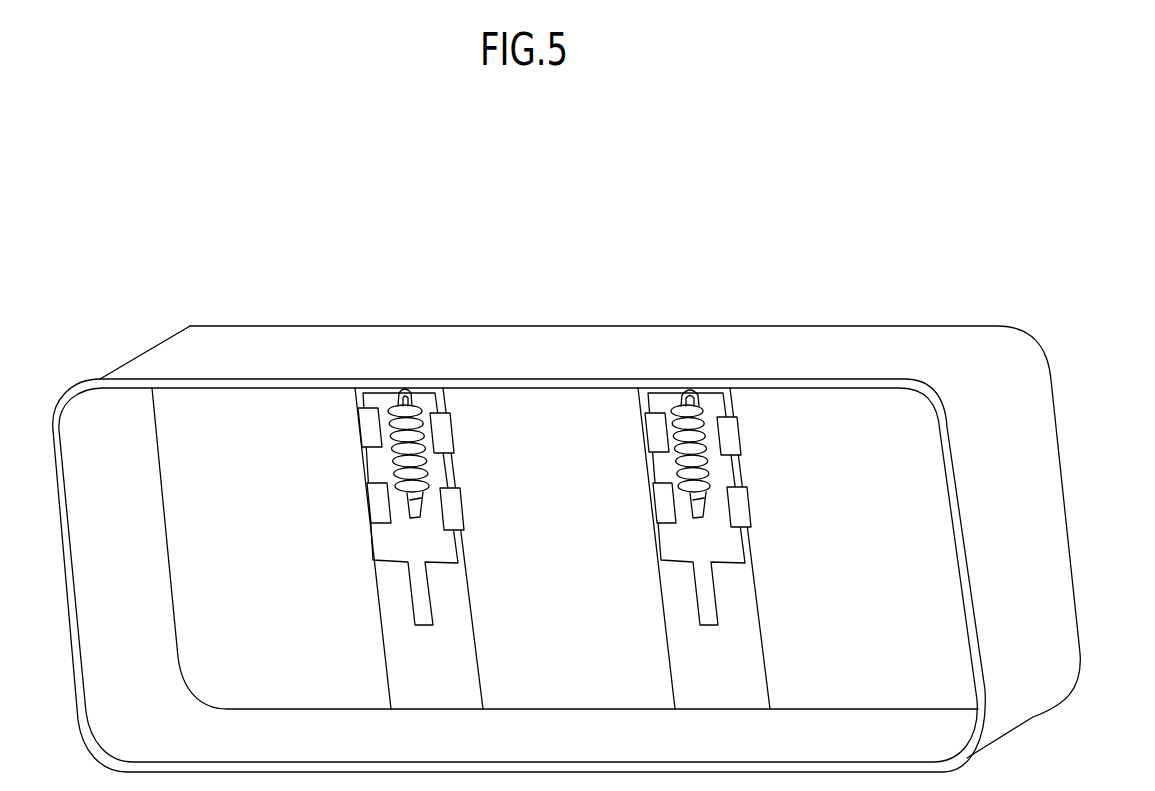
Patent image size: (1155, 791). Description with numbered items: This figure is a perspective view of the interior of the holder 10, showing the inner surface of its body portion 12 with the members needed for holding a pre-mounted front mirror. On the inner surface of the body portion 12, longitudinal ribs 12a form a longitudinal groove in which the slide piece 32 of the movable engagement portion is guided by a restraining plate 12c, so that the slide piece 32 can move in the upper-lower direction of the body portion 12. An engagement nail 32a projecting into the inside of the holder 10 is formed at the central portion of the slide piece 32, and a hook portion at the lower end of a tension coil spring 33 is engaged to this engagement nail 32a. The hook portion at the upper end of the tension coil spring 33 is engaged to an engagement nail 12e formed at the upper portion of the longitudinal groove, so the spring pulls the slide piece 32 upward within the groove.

The holder 10 is at (938, 316).
The body portion 12 is at (1048, 497).
The longitudinal rib 12a is at (737, 475).
The restraining plate 12c is at (727, 438).
The engagement nail 12e is at (690, 396).
The slide piece 32 is at (703, 407).
The engagement nail 32a is at (703, 513).
The tension coil spring 33 is at (663, 405).